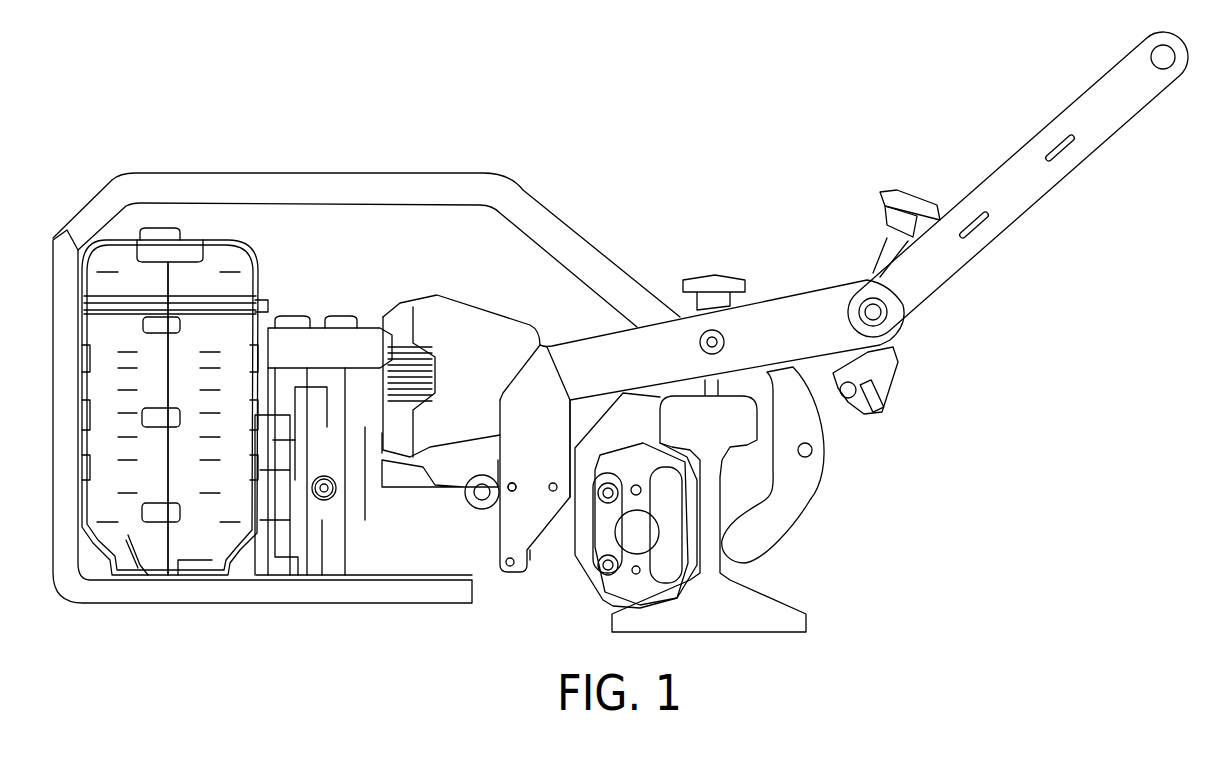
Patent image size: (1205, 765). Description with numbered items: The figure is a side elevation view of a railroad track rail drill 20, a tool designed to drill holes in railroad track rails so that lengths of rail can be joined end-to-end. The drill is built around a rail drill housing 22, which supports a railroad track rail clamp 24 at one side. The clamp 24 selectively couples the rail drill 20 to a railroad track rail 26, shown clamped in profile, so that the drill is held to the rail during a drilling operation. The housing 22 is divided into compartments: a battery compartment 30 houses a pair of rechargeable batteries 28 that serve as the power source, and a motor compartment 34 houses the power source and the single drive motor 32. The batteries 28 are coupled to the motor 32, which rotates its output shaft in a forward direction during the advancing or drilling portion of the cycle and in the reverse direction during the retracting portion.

The railroad track rail drill 20 is at (668, 161).
The rail drill housing 22 is at (389, 538).
The railroad track rail clamp 24 is at (786, 293).
The railroad track rail 26 is at (733, 617).
The rechargeable batteries 28 is at (148, 552).
The battery compartment 30 is at (197, 543).
The single drive motor 32 is at (462, 338).
The motor compartment 34 is at (487, 337).